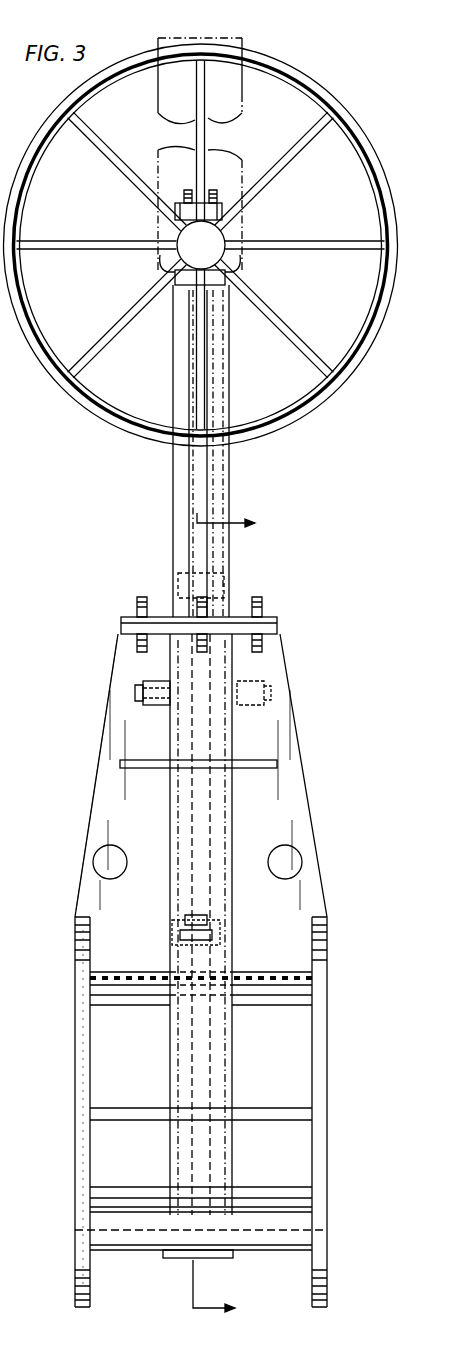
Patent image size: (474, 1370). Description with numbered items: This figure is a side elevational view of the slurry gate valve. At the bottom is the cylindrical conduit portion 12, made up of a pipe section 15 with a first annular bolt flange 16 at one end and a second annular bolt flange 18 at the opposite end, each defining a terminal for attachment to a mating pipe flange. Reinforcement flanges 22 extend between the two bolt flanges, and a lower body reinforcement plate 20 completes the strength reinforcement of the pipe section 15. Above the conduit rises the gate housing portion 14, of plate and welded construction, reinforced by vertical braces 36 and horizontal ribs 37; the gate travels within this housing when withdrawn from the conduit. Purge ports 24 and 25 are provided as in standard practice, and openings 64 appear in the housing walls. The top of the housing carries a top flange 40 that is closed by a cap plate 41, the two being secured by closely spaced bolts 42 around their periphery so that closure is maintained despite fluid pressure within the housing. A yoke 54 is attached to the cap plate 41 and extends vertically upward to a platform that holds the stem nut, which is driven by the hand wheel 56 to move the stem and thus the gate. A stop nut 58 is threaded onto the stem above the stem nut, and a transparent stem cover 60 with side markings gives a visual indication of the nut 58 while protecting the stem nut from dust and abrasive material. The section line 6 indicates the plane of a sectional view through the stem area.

The section line 6- 6 is at (234, 919).
The cylindrical conduit portion 12 is at (112, 1043).
The gate housing portion 14 is at (246, 740).
The pipe section 15 is at (100, 1081).
The first annular bolt flange 16 is at (78, 1232).
The second annular bolt flange 18 is at (328, 1232).
The lower body reinforcement plate 20 is at (212, 1259).
The reinforcement flanges 22 is at (296, 1110).
The purge port 24 is at (142, 690).
The purge port 25 is at (270, 688).
The vertical braces 36 is at (100, 792).
The horizontal ribs 37 is at (140, 762).
The top flange 40 is at (280, 641).
The cap plate 41 is at (277, 620).
The bolts 42 is at (262, 598).
The yoke 54 is at (173, 487).
The hand wheel 56 is at (312, 400).
The stop nut 58 is at (235, 180).
The transparent stem cover 60 is at (243, 113).
The hole 64 is at (104, 865).